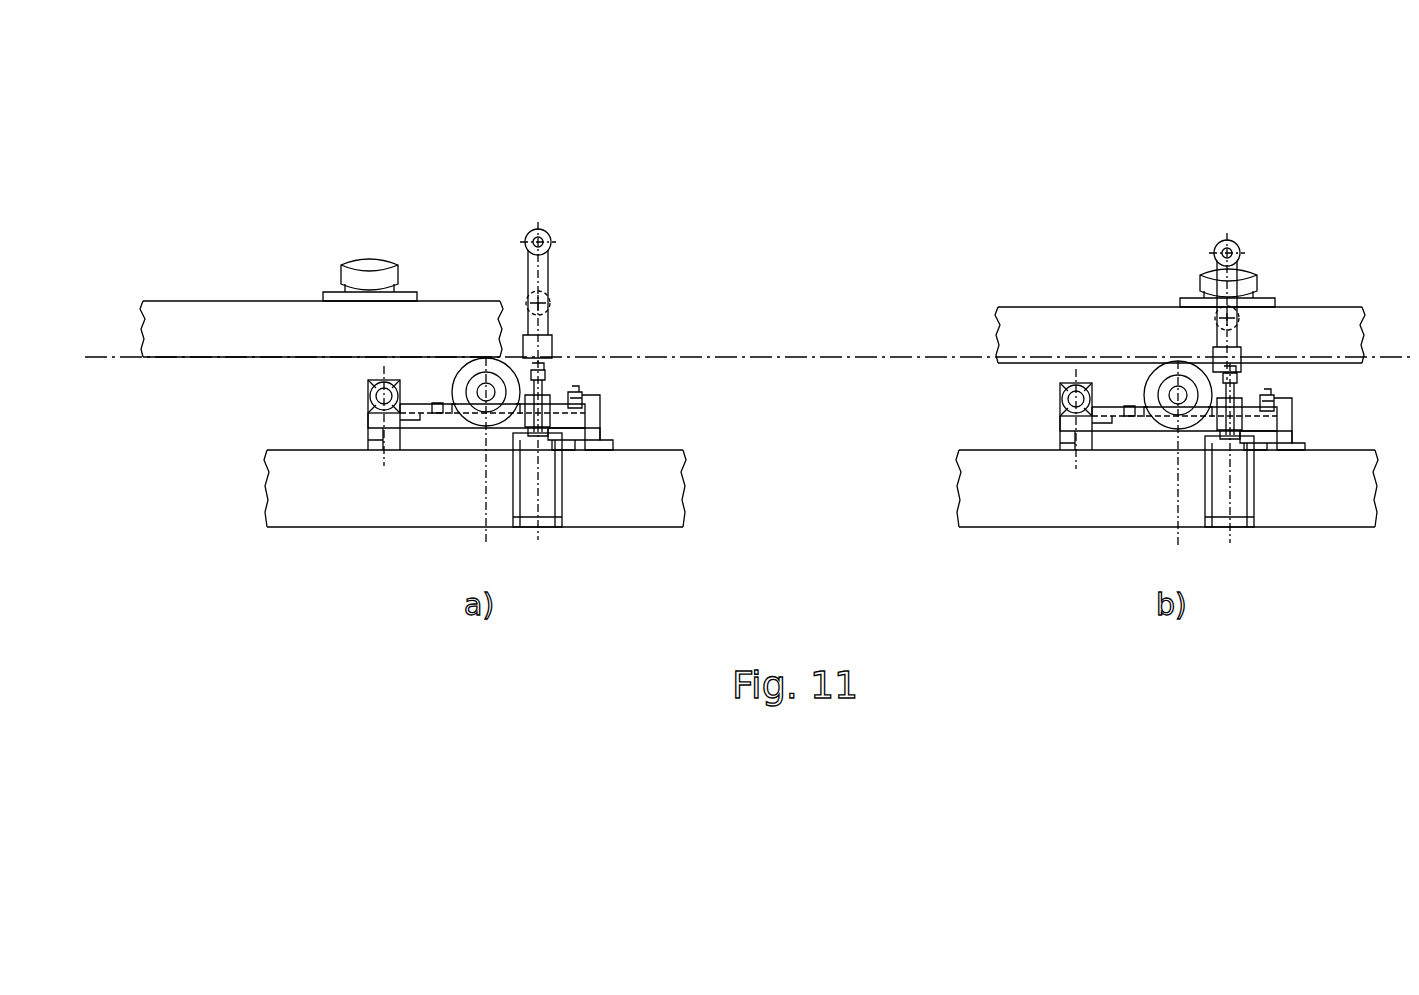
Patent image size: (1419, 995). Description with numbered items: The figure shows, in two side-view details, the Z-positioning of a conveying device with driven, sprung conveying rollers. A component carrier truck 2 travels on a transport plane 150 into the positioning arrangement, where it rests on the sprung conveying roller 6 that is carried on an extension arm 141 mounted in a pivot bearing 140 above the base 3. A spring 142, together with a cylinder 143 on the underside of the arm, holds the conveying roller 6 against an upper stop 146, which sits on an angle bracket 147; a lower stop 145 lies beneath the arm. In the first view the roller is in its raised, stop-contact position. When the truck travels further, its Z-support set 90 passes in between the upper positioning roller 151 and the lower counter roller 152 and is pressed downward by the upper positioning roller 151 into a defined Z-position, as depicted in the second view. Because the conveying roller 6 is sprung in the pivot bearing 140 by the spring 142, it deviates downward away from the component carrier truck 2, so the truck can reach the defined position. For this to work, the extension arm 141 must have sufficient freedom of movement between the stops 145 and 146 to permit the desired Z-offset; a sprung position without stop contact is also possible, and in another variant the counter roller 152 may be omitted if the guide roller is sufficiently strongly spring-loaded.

In FIG. 11a, the component carrier truck 2 is at (282, 316).
In FIG. 11b, the component carrier truck 2 is at (1037, 321).
In FIG. 11a, the lower plate 3 is at (288, 507).
In FIG. 11b, the lower plate 3 is at (980, 507).
In FIG. 11a, the conveying roller 6 is at (468, 373).
In FIG. 11b, the conveying roller 6 is at (1168, 437).
In FIG. 11a, the Z-support set 90 is at (402, 274).
In FIG. 11b, the Z-support set 90 is at (1260, 280).
In FIG. 11a, the pivot bearing 140 is at (380, 393).
In FIG. 11b, the pivot bearing 140 is at (1041, 419).
In FIG. 11a, the extension arm 141 is at (404, 432).
In FIG. 11b, the extension arm 141 is at (1168, 464).
In FIG. 11a, the spring 142 is at (515, 437).
In FIG. 11b, the spring 142 is at (1185, 433).
In FIG. 11a, the cylinder 143 is at (555, 452).
In FIG. 11b, the cylinder 143 is at (1257, 453).
In FIG. 11a, the lower stop 145 is at (575, 440).
In FIG. 11b, the lower stop 145 is at (1301, 459).
In FIG. 11a, the upper stop 146 is at (598, 408).
In FIG. 11b, the upper stop 146 is at (1322, 393).
In FIG. 11a, the angle bracket 147 is at (593, 432).
In FIG. 11b, the angle bracket 147 is at (1329, 424).
In FIG. 11a, the transport plane 150 is at (836, 357).
In FIG. 11a, the upper positioning roller 151 is at (550, 233).
In FIG. 11b, the upper positioning roller 151 is at (1238, 245).
In FIG. 11a, the lower counter roller 152 is at (550, 305).
In FIG. 11b, the lower counter roller 152 is at (1240, 320).